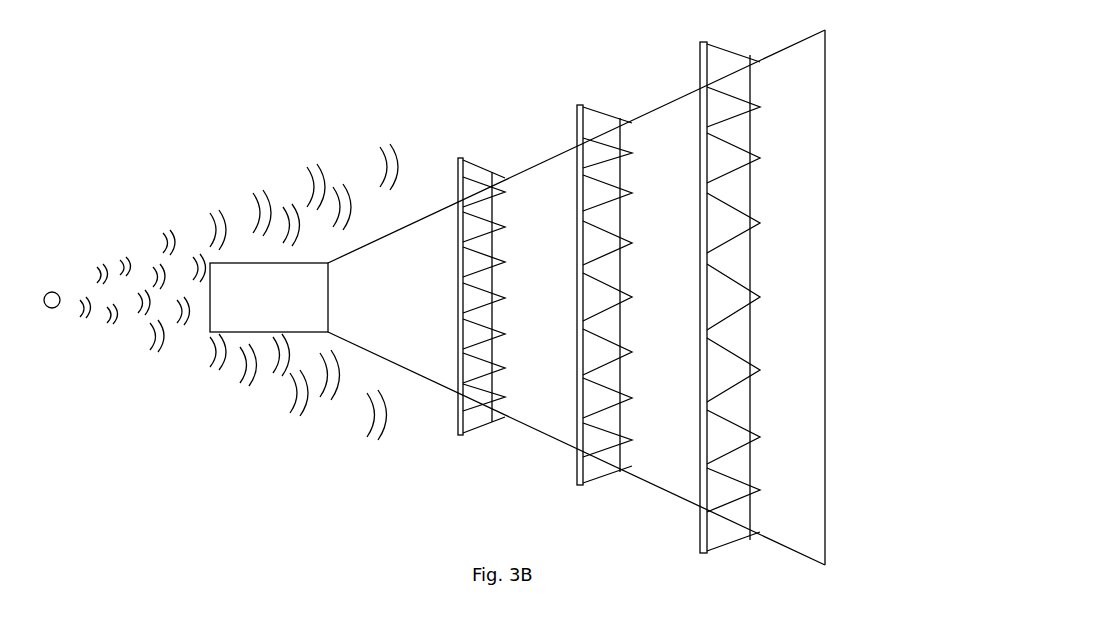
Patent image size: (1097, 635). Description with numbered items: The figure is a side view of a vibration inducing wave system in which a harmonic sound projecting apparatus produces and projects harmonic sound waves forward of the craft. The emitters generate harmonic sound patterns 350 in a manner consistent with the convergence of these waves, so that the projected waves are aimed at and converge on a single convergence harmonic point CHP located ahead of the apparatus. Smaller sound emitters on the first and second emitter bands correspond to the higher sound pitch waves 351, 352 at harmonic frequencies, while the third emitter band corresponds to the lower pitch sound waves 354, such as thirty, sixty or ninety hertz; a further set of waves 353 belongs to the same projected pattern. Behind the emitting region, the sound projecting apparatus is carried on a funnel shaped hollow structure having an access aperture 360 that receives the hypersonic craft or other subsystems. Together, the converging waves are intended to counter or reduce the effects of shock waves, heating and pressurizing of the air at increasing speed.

The convergence harmonic point CHP is at (57, 262).
The harmonic sound patterns 350 is at (193, 418).
The higher sound pitch waves 351 is at (165, 234).
The higher sound pitch waves 352 is at (213, 216).
The acoustic wave 353 is at (335, 190).
The lower pitch sound waves 354 is at (99, 266).
The access aperture 360 is at (855, 306).